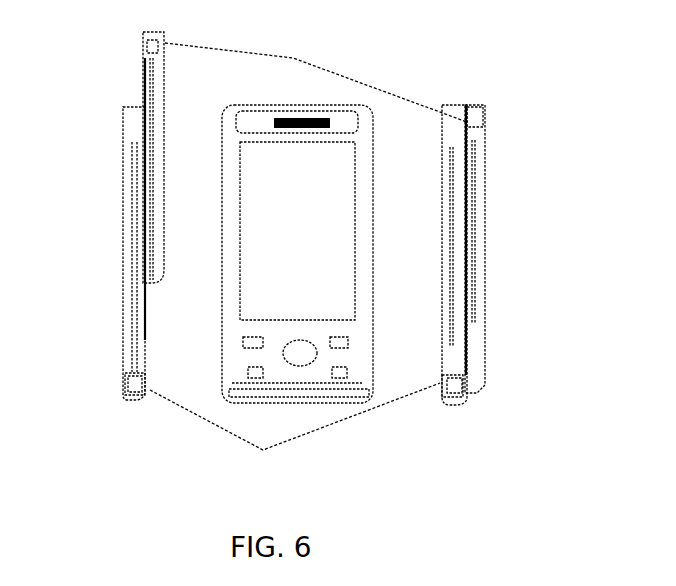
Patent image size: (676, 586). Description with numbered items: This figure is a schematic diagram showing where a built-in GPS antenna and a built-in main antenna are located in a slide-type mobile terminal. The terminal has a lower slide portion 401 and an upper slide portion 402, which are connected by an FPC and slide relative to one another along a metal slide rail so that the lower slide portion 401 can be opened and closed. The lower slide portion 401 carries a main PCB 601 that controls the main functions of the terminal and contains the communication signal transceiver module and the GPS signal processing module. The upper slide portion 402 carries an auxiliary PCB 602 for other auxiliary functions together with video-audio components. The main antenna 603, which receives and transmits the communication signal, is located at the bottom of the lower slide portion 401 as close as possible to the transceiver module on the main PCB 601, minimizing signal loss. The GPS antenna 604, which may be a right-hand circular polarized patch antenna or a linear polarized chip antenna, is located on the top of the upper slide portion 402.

The lower slide portion 401 is at (508, 332).
The upper slide portion 402 is at (155, 248).
The main PCB 601 is at (125, 308).
The auxiliary PCB 602 is at (310, 212).
The main antenna 603 is at (278, 400).
The GPS antenna 604 is at (260, 127).